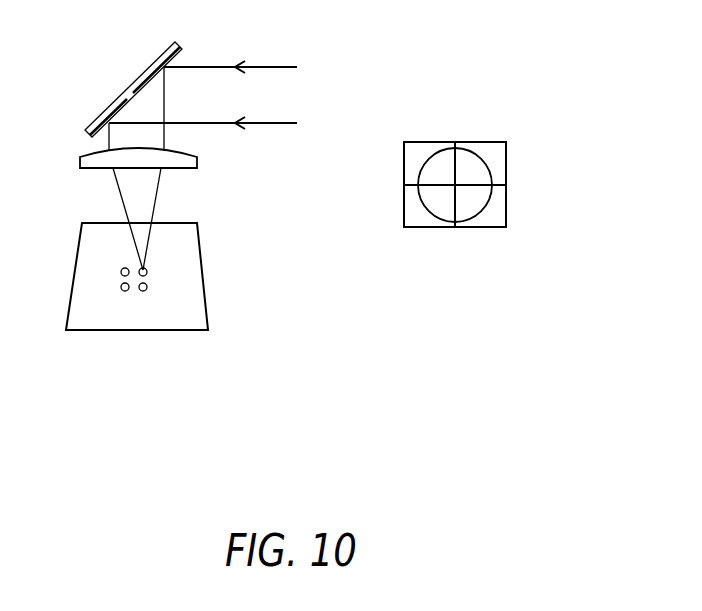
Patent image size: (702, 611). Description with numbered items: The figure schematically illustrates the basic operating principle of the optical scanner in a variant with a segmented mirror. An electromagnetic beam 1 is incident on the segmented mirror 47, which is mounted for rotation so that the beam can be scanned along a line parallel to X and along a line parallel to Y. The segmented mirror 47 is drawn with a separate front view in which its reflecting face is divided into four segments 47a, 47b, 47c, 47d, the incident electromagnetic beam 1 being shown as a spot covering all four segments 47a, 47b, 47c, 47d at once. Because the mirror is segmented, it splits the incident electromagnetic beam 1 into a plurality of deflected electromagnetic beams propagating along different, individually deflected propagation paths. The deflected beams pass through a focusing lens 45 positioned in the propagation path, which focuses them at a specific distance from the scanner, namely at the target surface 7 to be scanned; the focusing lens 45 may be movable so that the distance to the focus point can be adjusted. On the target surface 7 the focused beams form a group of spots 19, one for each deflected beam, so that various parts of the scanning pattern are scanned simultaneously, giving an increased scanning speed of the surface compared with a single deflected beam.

The electromagnetic beam 1 is at (268, 63).
The segmented mirror 47 is at (118, 88).
The first region of mirror 47a is at (422, 140).
The second region of mirror 47b is at (487, 140).
The third region of mirror 47c is at (487, 228).
The fourth region of mirror 47d is at (422, 228).
The focusing lens 45 is at (205, 172).
The irradiation spots 19 is at (153, 273).
The target surface 7 is at (178, 310).